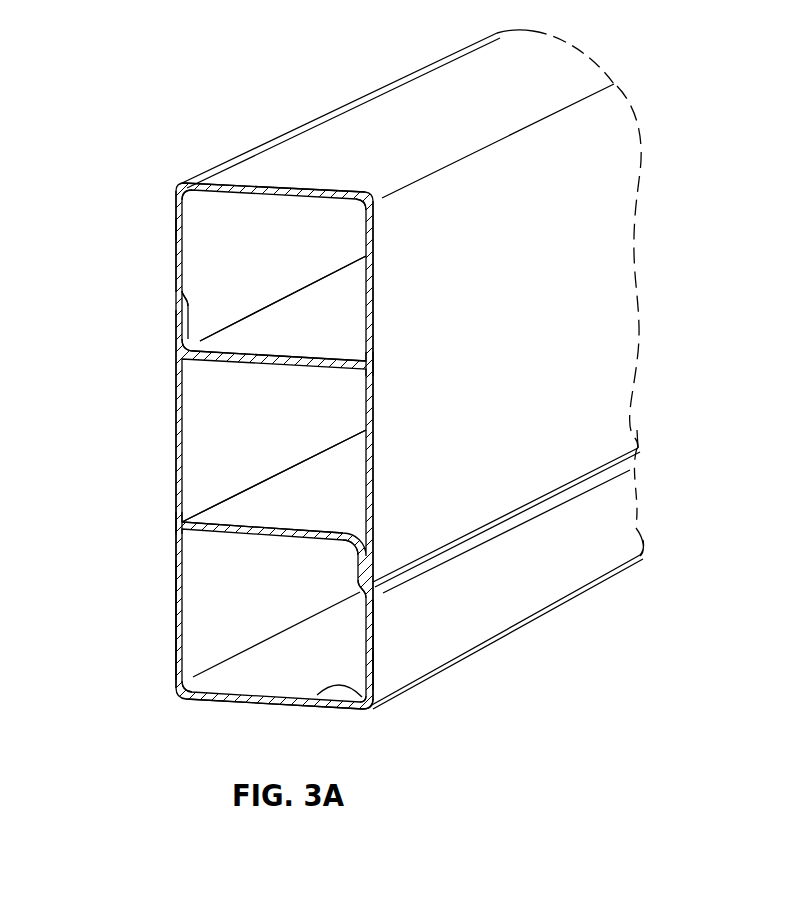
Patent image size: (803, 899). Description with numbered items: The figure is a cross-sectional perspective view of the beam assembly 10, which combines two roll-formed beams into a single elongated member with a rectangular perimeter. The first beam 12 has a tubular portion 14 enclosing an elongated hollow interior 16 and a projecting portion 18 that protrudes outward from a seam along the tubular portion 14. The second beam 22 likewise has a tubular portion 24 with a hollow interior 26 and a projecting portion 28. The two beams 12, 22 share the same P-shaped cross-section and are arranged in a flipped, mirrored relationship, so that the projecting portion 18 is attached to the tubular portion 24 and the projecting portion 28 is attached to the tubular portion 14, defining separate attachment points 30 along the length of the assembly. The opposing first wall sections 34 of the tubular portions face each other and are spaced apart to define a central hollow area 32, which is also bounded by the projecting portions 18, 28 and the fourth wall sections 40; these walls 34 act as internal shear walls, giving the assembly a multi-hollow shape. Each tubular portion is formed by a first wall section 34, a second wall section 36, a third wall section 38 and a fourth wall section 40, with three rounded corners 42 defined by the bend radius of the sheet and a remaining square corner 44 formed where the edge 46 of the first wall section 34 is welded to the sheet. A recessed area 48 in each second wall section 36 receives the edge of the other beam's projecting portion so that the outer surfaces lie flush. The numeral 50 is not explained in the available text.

The beam assembly 10 is at (150, 115).
The first beam 12 is at (375, 137).
The tubular portion 14 is at (175, 185).
The elongated hollow interior 16 is at (205, 251).
The projecting portion 18 is at (374, 450).
The second beam 22 is at (185, 703).
The tubular portion 24 is at (368, 713).
The elongated hollow interior 26 is at (195, 613).
The projecting portion 28 is at (176, 415).
The attachment points 30 is at (177, 318).
The hollow area 32 is at (212, 452).
The first wall section 34 is at (277, 352).
The second wall section 36 is at (176, 275).
The third wall section 38 is at (287, 187).
The fourth wall section 40 is at (374, 268).
The rounded corners 42 is at (358, 197).
The square corner 44 is at (368, 362).
The edge 46 is at (368, 365).
The recessed area 48 is at (178, 297).
The wall segment 50 is at (176, 228).